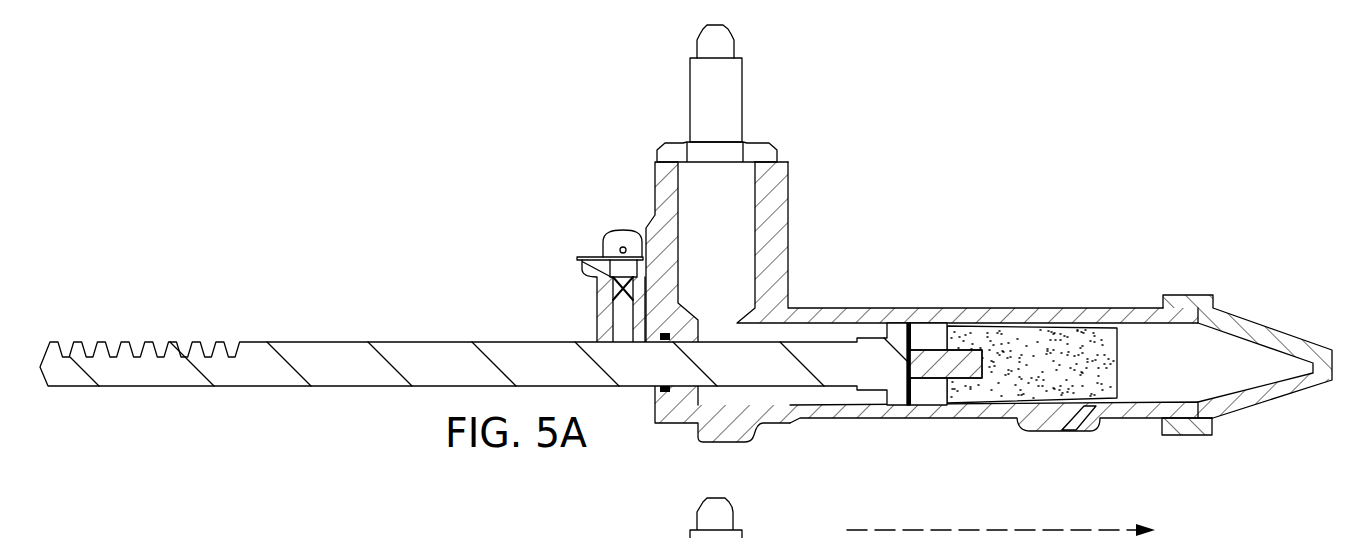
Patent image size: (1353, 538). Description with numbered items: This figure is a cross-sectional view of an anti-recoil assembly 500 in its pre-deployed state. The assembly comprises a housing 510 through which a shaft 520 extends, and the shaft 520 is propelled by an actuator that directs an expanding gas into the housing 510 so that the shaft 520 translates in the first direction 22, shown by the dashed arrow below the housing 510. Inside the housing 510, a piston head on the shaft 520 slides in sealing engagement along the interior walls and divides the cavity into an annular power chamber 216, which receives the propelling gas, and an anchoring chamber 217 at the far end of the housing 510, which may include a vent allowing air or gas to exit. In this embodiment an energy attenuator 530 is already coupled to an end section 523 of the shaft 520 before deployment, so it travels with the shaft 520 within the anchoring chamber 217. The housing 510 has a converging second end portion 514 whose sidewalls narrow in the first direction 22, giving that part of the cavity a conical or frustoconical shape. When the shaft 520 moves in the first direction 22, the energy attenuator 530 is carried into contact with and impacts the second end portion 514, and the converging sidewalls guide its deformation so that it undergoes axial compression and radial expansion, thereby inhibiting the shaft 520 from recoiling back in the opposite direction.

The anti-recoil assembly 500 is at (321, 182).
The housing 510 is at (1147, 315).
The annular power chamber 216 is at (823, 340).
The anchoring chamber 217 is at (1190, 340).
The second end portion 514 is at (1228, 420).
The shaft 520 is at (440, 362).
The energy attenuator 530 is at (1037, 352).
The end section 523 is at (937, 372).
The first direction 22 is at (932, 530).